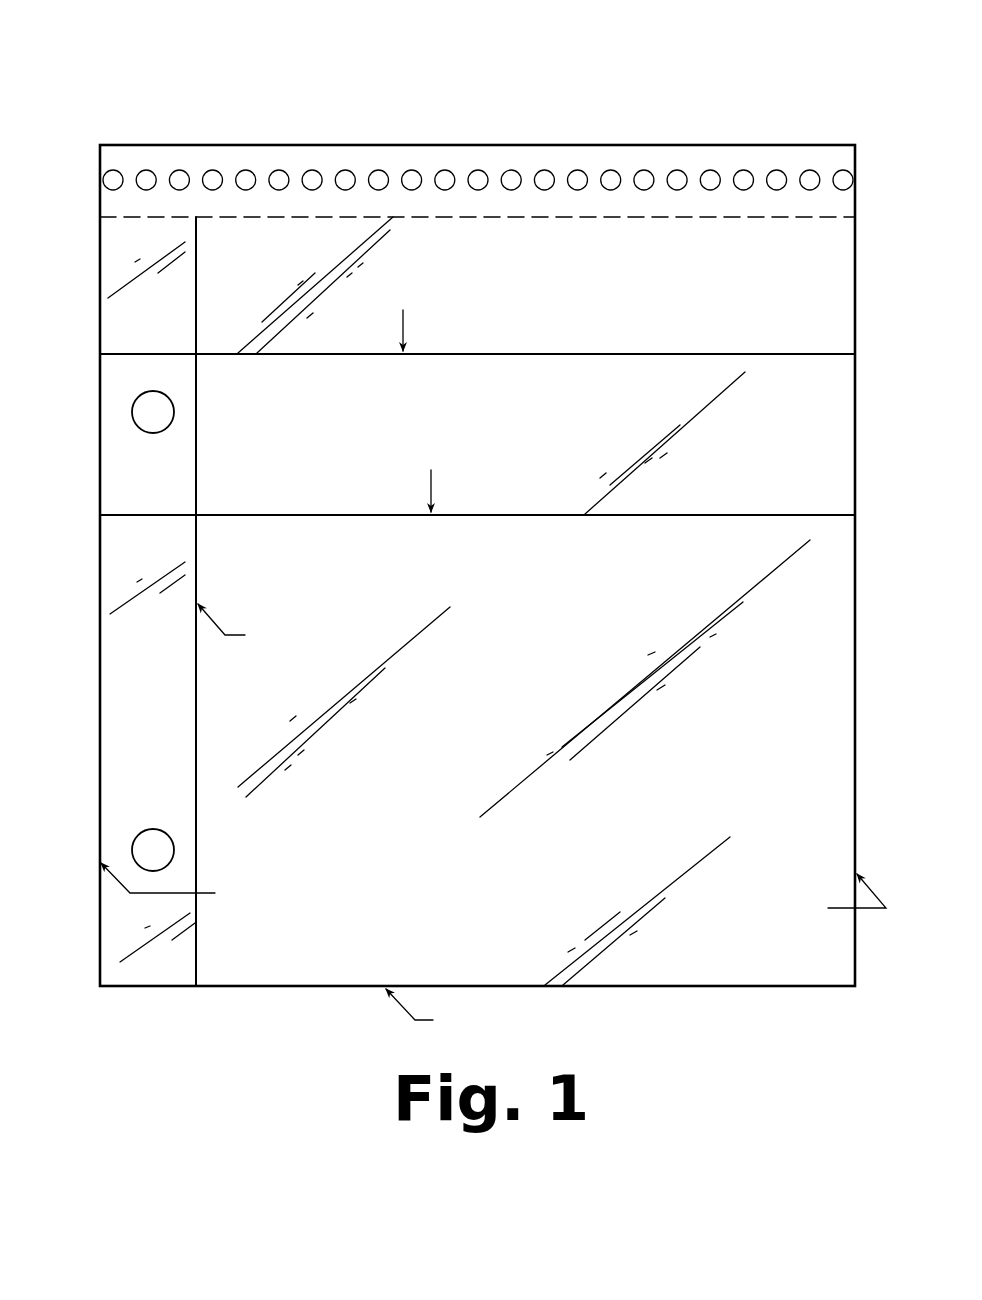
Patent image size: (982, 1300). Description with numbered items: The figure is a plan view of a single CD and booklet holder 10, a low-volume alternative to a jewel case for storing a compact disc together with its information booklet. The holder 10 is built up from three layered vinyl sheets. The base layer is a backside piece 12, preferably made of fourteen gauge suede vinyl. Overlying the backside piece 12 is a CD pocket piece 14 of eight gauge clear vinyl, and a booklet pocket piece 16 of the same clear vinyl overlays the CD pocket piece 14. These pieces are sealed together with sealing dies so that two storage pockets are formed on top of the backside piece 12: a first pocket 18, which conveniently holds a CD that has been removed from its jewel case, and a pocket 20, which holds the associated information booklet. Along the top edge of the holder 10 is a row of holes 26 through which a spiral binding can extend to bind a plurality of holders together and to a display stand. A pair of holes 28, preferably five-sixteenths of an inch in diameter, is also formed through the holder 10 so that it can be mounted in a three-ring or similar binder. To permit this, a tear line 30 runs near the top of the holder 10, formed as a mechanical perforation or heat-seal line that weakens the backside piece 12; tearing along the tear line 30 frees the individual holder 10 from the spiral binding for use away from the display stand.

The single CD and booklet holder 10 is at (150, 90).
The backside piece 12 is at (846, 246).
The CD pocket piece 14 is at (846, 388).
The booklet pocket piece 16 is at (846, 693).
The first pocket 18 is at (677, 350).
The pocket 20 is at (677, 510).
The holes 26 is at (577, 171).
The holes 28 is at (174, 417).
The tear line 30 is at (238, 219).